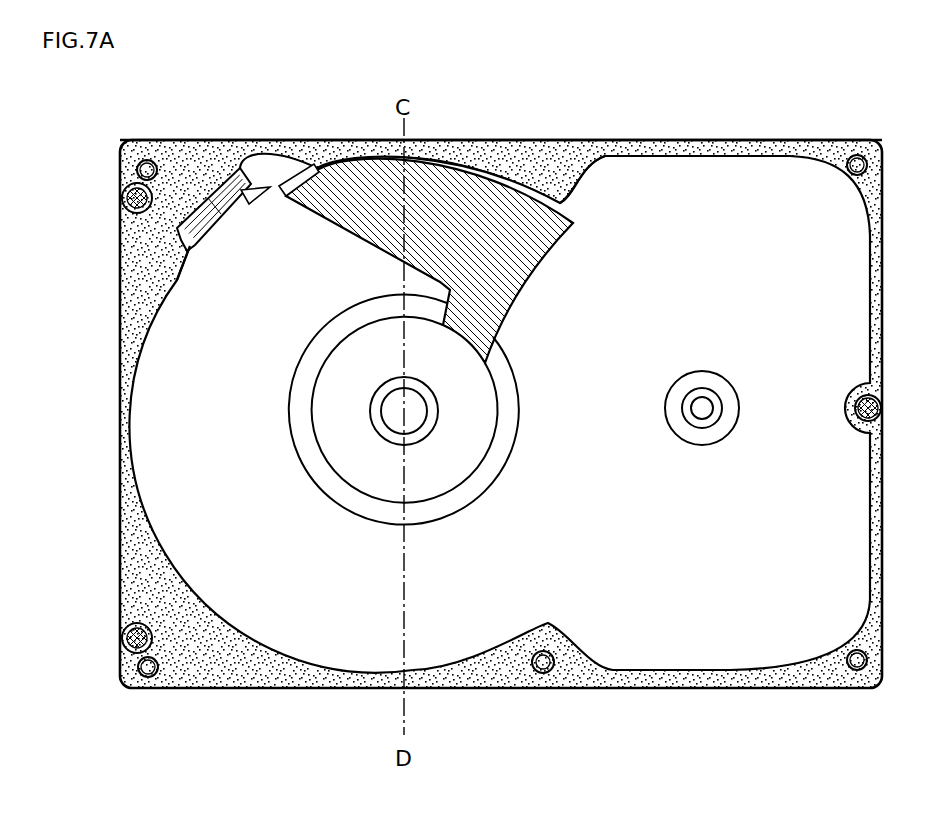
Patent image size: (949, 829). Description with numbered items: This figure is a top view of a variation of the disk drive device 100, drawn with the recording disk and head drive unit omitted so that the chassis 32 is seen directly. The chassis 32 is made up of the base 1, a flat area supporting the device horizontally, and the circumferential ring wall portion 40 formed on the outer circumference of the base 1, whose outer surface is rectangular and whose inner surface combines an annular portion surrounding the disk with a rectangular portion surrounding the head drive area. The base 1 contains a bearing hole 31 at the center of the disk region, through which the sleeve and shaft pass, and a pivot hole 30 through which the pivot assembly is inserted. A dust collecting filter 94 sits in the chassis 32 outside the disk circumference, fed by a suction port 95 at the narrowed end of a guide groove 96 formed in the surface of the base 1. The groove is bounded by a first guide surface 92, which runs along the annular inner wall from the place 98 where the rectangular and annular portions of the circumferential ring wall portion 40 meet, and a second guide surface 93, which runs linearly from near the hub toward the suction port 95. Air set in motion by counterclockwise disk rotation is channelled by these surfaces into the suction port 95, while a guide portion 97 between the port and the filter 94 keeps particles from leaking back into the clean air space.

The base 1 is at (843, 570).
The pivot hole 30 is at (704, 407).
The bearing hole 31 is at (396, 412).
The chassis 32 is at (776, 106).
The circumferential ring wall portion 40 is at (830, 667).
The first guide surface 92 is at (468, 248).
The second guide surface 93 is at (340, 224).
The dust collecting filter 94 is at (200, 192).
The suction port 95 is at (294, 178).
The guide groove 96 is at (463, 197).
The guide portion 97 is at (250, 190).
The place where rectangular and annular portions are connected 98 is at (565, 198).
The disk drive device 100 is at (602, 792).